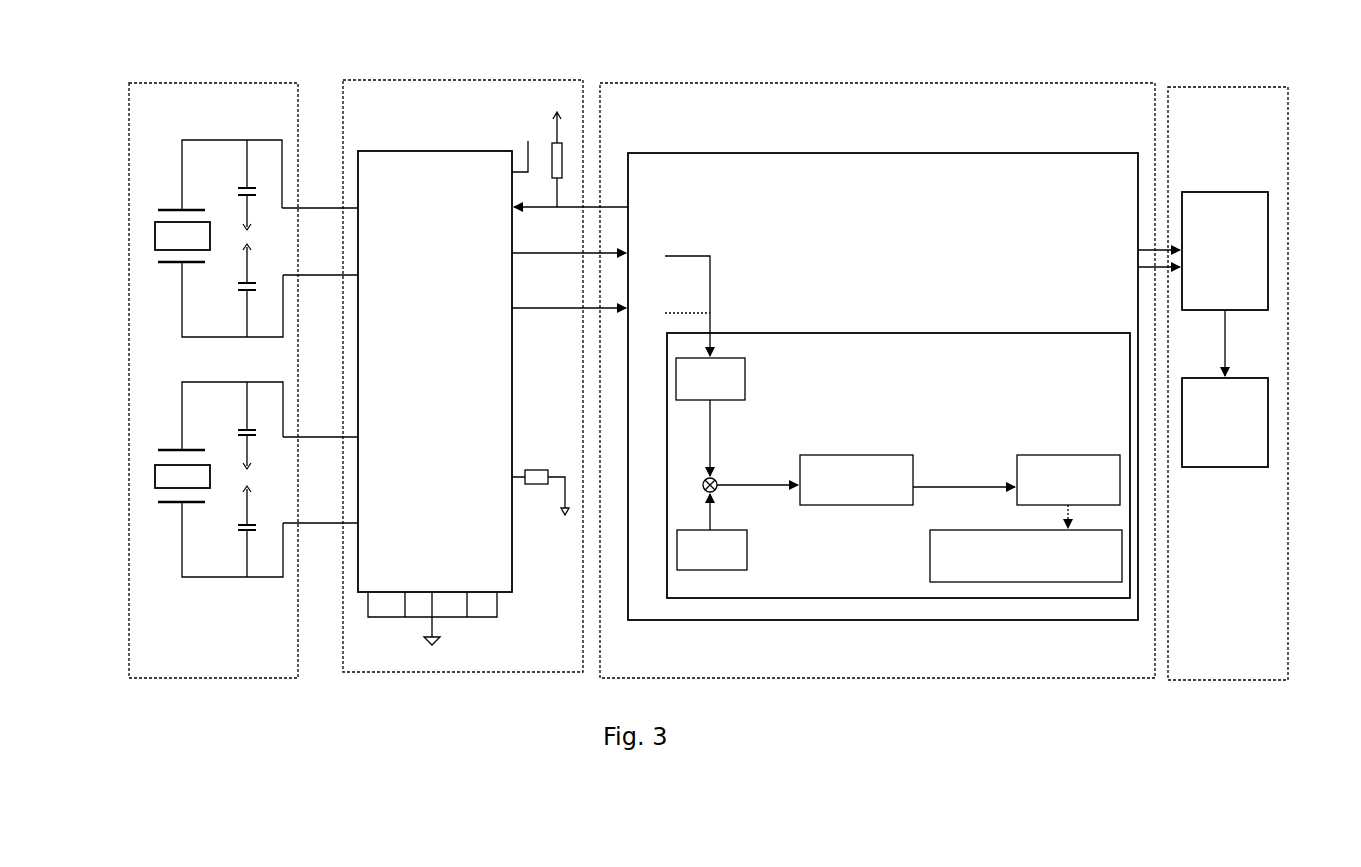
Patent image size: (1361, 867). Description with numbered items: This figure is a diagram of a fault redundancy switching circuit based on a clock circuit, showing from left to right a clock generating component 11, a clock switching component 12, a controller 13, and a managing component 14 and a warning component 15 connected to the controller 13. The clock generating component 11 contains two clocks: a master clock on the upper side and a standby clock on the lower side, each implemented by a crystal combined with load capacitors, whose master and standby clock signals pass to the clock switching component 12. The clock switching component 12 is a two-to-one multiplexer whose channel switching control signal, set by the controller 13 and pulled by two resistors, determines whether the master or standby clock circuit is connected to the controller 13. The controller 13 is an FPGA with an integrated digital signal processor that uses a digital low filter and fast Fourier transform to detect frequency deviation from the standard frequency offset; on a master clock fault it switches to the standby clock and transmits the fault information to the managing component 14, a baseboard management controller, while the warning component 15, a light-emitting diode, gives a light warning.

The clock generating component 11 is at (212, 83).
The clock switching component 12 is at (438, 80).
The controller 13 is at (885, 83).
The managing component 14 is at (1268, 232).
The warning component 15 is at (1268, 400).